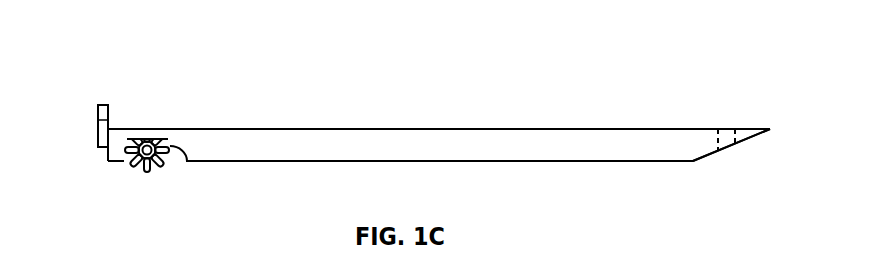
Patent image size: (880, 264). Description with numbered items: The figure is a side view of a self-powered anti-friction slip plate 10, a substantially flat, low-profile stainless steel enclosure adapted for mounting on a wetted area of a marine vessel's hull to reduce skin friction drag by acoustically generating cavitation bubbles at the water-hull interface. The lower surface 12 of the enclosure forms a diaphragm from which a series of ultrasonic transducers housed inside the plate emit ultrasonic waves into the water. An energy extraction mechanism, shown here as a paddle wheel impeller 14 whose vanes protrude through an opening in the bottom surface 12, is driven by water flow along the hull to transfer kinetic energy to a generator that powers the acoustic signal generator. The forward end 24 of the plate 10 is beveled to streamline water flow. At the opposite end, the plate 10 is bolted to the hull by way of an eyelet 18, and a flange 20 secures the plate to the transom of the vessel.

The slip plate 10 is at (141, 61).
The lower surface 12 is at (438, 162).
The paddle wheel impeller 14 is at (138, 182).
The eyelet 18 is at (727, 128).
The flange 20 is at (98, 110).
The forward end 24 is at (735, 158).